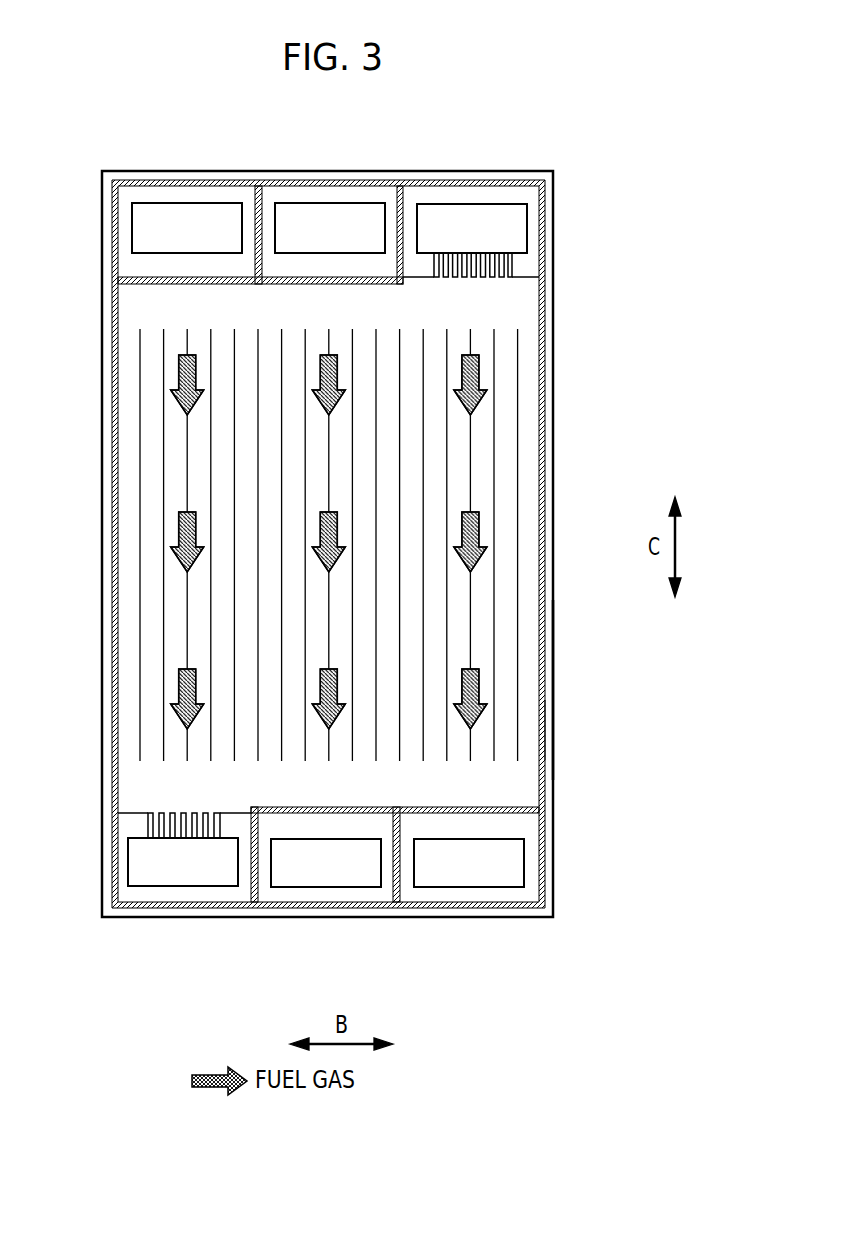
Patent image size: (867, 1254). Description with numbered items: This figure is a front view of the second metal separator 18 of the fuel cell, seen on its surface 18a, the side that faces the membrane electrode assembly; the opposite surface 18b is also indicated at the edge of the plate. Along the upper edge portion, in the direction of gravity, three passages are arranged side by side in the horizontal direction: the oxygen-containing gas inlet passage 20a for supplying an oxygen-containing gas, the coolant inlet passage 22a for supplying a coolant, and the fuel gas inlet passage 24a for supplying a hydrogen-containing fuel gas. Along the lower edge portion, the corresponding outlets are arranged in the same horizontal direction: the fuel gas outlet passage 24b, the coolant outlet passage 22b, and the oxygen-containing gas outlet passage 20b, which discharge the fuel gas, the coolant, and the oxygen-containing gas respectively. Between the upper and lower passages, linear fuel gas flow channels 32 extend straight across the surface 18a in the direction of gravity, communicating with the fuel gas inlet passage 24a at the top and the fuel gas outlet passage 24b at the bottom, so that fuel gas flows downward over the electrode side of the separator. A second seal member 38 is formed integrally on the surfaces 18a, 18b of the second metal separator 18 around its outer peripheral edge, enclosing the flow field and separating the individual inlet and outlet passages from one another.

The second metal separator 18 is at (543, 86).
The surface 18a is at (550, 689).
The surface 18b is at (546, 725).
The oxygen-containing gas inlet passage 20a is at (190, 227).
The oxygen-containing gas outlet passage 20b is at (467, 863).
The coolant inlet passage 22a is at (333, 228).
The coolant outlet passage 22b is at (324, 866).
The fuel gas inlet passage 24a is at (475, 227).
The fuel gas outlet passage 24b is at (180, 863).
The fuel gas flow channels 32 is at (487, 376).
The second seal member 38 is at (543, 440).